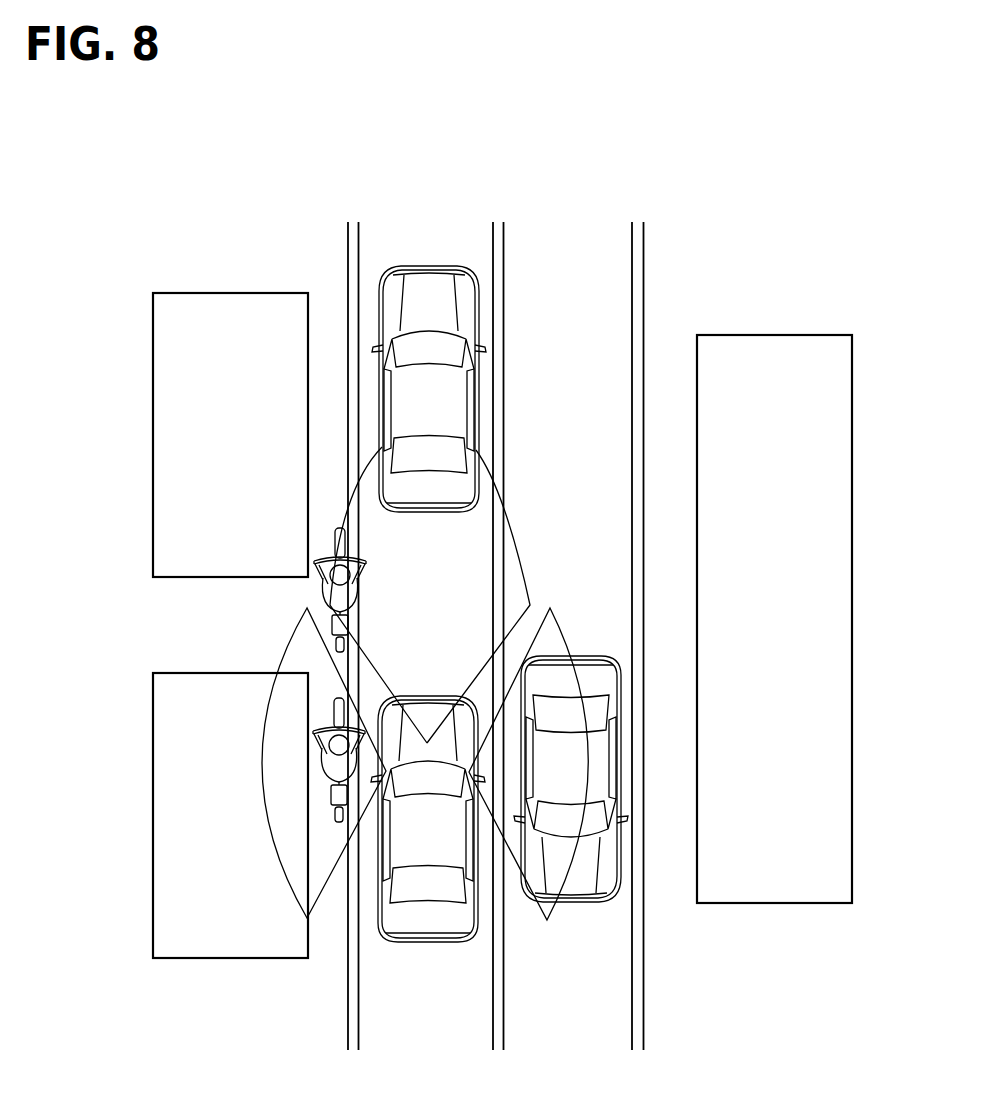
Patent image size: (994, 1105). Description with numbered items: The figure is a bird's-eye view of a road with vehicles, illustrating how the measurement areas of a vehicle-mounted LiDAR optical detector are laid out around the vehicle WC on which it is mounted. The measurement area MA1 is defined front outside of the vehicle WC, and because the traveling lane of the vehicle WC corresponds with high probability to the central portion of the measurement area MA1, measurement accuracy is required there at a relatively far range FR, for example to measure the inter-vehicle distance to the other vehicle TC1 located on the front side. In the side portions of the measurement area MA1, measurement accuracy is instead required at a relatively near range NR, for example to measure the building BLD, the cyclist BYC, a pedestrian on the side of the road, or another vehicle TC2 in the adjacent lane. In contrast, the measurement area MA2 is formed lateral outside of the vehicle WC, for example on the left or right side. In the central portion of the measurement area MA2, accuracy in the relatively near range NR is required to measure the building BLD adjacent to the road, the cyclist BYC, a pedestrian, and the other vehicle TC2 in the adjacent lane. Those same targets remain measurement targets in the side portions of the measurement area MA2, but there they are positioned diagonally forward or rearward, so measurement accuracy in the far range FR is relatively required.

The other vehicle located on the front side TC1 is at (426, 265).
The other vehicle in the adjacent lane TC2 is at (588, 653).
The vehicle WC is at (428, 944).
The cyclist BYC is at (331, 578).
The building BLD is at (153, 434).
The measurement area MA1 is at (518, 550).
The measurement area MA2 is at (278, 863).
The near range NR is at (378, 610).
The far range FR is at (440, 473).